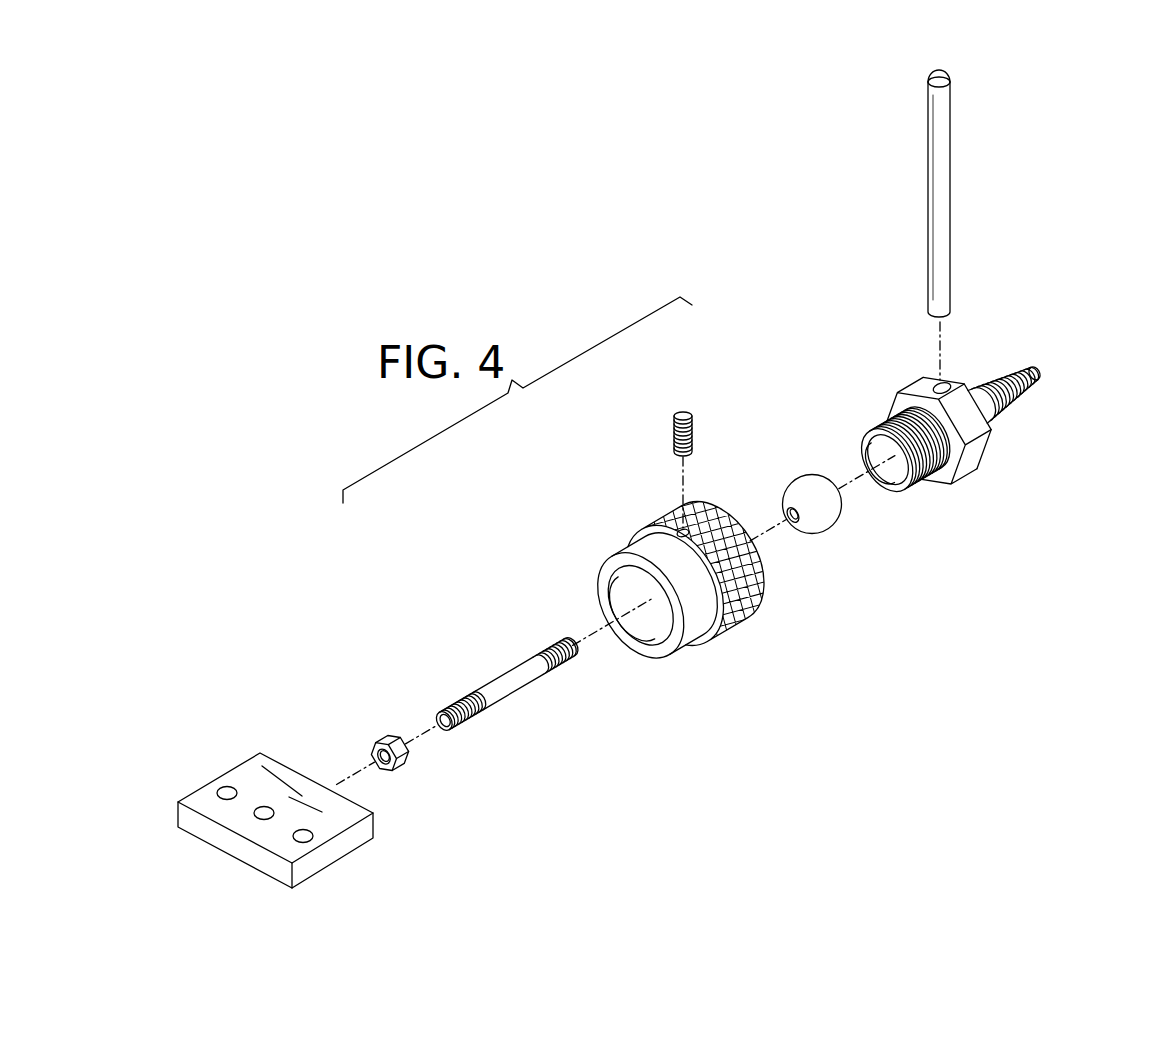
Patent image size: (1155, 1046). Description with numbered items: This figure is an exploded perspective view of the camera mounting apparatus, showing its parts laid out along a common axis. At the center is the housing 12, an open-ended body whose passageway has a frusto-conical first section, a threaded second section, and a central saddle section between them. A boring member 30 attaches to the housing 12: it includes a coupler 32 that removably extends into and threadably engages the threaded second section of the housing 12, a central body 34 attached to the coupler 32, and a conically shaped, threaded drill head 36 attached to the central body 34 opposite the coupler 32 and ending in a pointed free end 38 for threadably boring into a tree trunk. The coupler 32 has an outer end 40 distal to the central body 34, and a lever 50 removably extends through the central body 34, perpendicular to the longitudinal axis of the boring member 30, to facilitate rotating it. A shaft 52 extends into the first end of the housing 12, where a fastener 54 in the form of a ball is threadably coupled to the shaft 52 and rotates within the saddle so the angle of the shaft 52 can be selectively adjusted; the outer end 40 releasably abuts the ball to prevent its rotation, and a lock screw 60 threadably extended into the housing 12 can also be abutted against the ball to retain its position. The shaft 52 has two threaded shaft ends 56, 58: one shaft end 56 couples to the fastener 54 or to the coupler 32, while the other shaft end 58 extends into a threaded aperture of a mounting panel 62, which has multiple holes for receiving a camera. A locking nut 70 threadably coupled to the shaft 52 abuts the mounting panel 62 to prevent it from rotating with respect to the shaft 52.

The housing 12 is at (695, 643).
The boring member 30 is at (961, 438).
The coupler 32 is at (932, 483).
The central body 34 is at (985, 450).
The drill head 36 is at (1045, 367).
The free end 38 is at (1036, 375).
The outer end 40 is at (903, 487).
The lever 50 is at (942, 126).
The shaft 52 is at (525, 698).
The fastener 54 is at (830, 538).
The shaft end 56 is at (575, 651).
The shaft end 58 is at (450, 727).
The lock screw 60 is at (690, 428).
The mounting panel 62 is at (260, 756).
The locking nut 70 is at (384, 736).